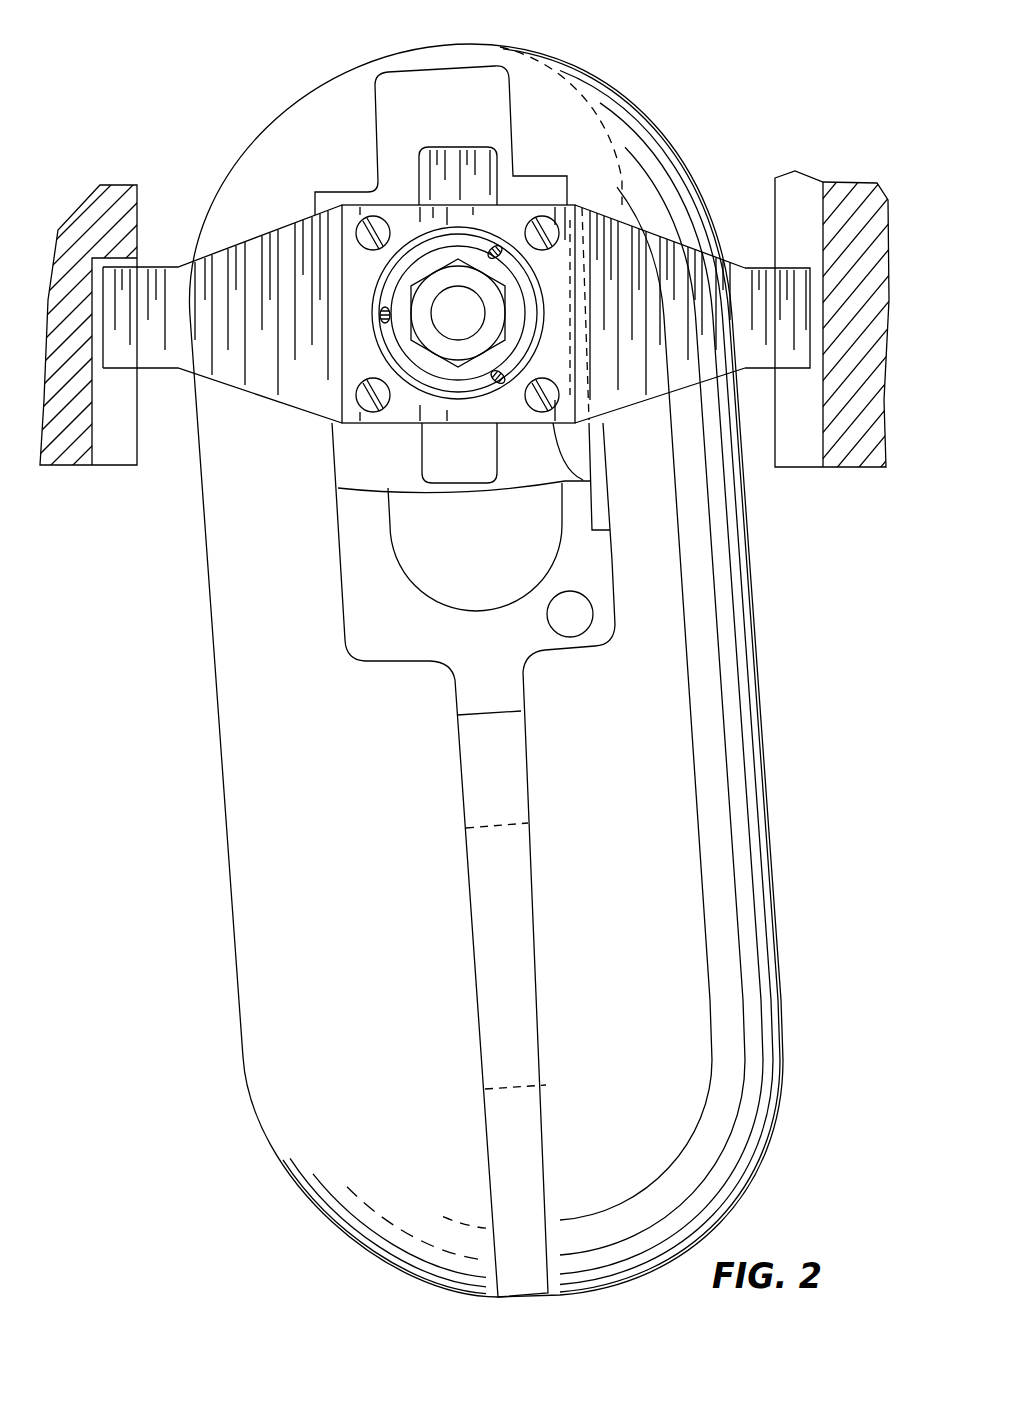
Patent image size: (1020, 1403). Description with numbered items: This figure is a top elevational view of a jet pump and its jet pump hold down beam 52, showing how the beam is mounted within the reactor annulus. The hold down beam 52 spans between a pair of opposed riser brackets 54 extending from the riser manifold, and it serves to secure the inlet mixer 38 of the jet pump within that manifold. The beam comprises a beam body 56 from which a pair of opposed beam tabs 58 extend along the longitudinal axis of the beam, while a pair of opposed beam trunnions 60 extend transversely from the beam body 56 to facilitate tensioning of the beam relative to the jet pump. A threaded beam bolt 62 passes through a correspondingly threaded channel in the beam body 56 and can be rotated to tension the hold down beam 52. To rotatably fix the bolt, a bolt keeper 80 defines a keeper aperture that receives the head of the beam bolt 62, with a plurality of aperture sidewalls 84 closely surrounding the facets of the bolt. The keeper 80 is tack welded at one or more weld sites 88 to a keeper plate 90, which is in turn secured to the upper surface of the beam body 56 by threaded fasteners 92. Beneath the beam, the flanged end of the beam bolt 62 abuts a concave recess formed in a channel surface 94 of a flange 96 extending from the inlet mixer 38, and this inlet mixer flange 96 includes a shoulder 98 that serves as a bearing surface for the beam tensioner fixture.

The inlet mixer 38 is at (611, 70).
The jet pump hold down beam 52 is at (262, 207).
The riser brackets 54 is at (118, 192).
The beam body 56 is at (631, 398).
The beam tabs 58 is at (158, 357).
The beam trunnions 60 is at (455, 152).
The beam bolt 62 is at (415, 322).
The bolt keeper 80 is at (400, 297).
The aperture sidewalls 84 is at (437, 346).
The weld sites 88 is at (500, 250).
The keeper plate 90 is at (348, 387).
The threaded fasteners 92 is at (362, 238).
The channel surface 94 is at (440, 577).
The inlet mixer flange 96 is at (388, 652).
The shoulder 98 is at (392, 91).